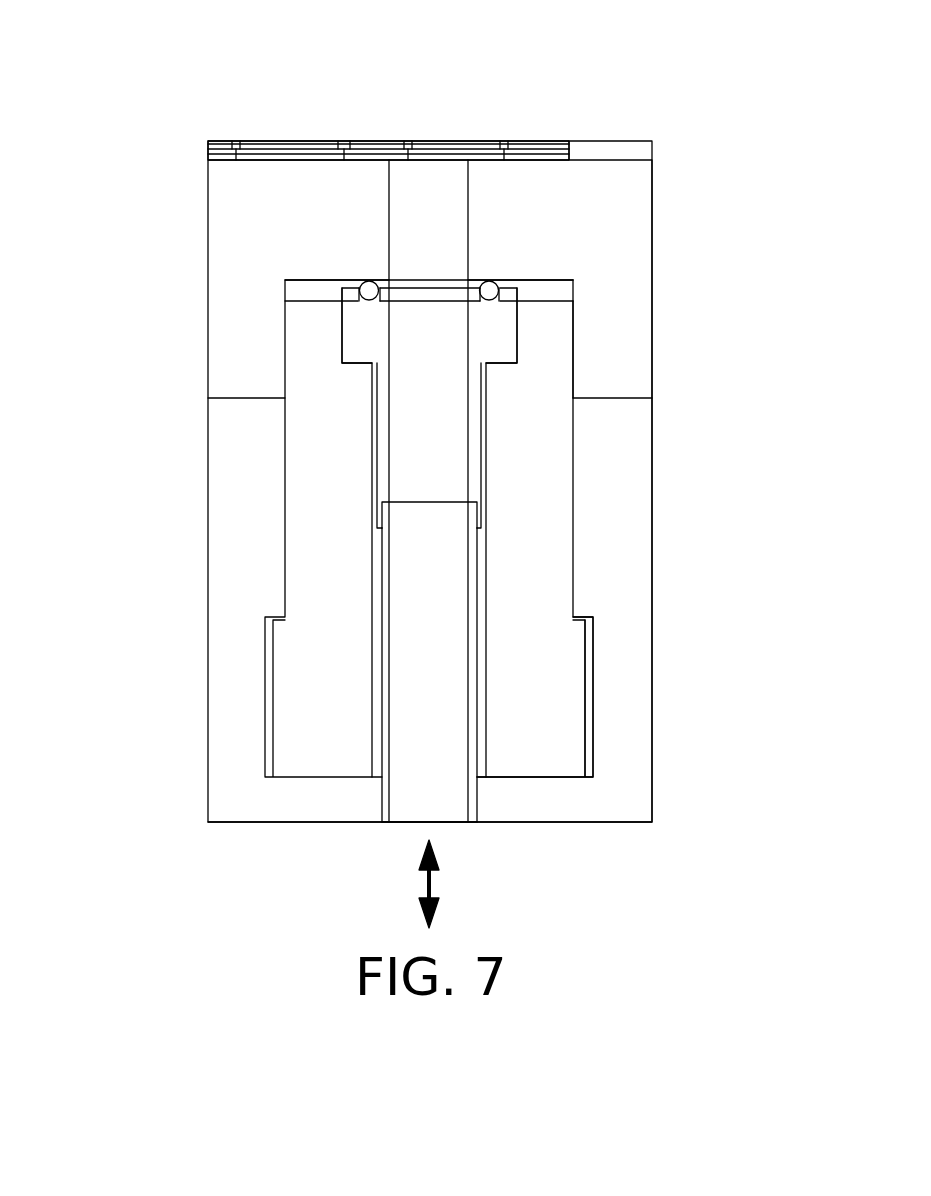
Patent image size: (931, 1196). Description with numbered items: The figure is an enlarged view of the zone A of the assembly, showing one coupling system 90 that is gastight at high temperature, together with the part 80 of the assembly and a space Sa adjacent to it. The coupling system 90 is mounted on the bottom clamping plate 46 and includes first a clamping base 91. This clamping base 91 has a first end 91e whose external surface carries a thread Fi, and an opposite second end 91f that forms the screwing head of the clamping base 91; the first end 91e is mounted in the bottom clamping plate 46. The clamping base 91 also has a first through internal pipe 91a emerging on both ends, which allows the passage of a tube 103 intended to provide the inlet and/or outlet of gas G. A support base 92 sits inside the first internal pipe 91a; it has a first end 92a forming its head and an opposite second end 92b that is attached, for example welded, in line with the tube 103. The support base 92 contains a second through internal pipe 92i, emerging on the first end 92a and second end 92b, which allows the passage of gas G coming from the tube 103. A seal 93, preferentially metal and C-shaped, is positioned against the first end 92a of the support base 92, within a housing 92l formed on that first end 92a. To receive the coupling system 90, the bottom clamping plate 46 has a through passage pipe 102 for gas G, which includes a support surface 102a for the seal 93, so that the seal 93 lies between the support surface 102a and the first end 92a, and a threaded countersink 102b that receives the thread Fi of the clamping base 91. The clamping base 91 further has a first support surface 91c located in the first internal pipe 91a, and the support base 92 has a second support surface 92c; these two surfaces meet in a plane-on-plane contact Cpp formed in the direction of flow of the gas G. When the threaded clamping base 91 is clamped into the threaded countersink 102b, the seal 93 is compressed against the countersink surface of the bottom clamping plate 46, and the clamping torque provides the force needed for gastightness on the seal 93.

The zone A is at (193, 82).
The plate 80 is at (678, 165).
The bottom clamping plate 46 is at (263, 268).
The gastight coupling system 90 is at (683, 385).
The space Sa is at (573, 408).
The clamping base 91 is at (308, 685).
The first through internal pipe 91a is at (487, 596).
The first support surface 91c is at (352, 366).
The first end 91e is at (308, 325).
The second end 91f is at (552, 717).
The thread Fi is at (573, 368).
The support base 92 is at (410, 430).
The first end 92a is at (477, 297).
The second end 92b is at (487, 512).
The second support surface 92c is at (502, 363).
The second through internal pipe 92i is at (410, 487).
The housing 92l is at (383, 287).
The plane-on-plane contact Cpp is at (332, 357).
The seal 93 is at (493, 280).
The passage pipe 102 is at (393, 215).
The support surface 102a is at (320, 278).
The threaded countersink 102b is at (573, 305).
The tube 103 is at (415, 790).
The gas G is at (433, 882).